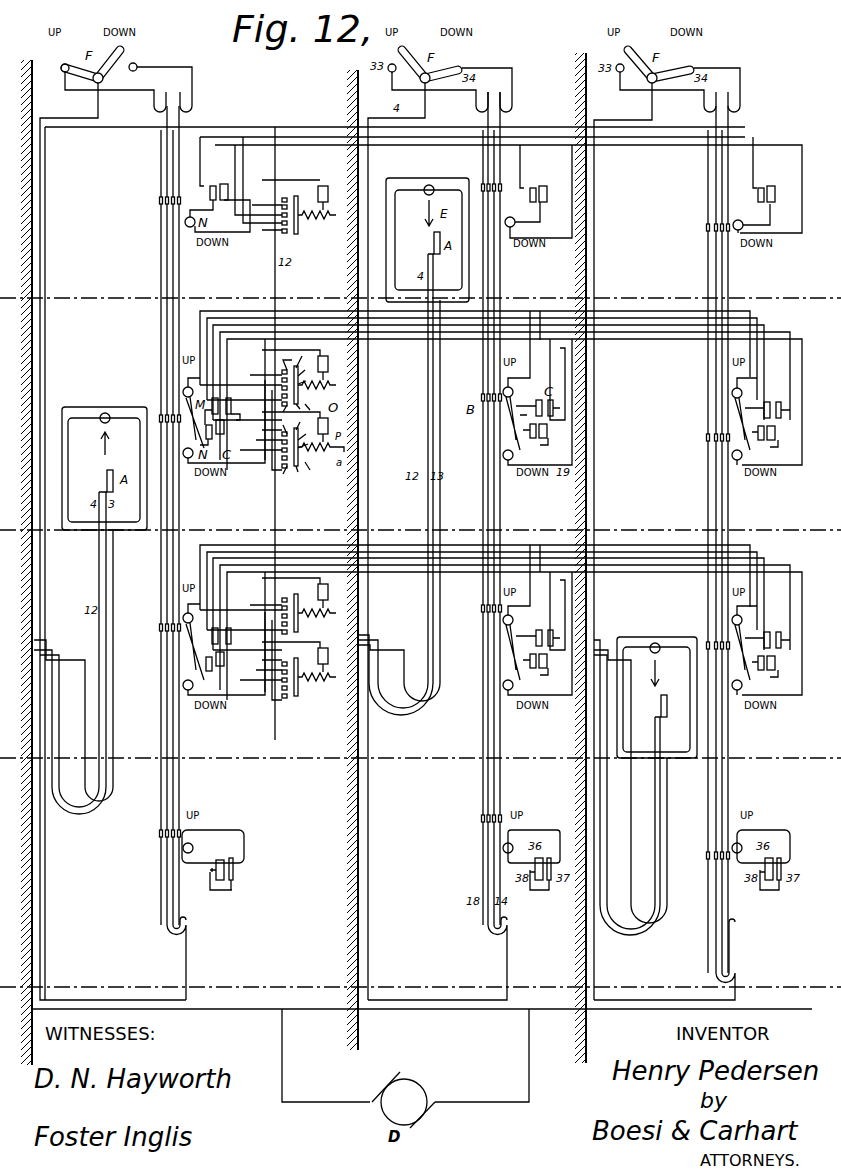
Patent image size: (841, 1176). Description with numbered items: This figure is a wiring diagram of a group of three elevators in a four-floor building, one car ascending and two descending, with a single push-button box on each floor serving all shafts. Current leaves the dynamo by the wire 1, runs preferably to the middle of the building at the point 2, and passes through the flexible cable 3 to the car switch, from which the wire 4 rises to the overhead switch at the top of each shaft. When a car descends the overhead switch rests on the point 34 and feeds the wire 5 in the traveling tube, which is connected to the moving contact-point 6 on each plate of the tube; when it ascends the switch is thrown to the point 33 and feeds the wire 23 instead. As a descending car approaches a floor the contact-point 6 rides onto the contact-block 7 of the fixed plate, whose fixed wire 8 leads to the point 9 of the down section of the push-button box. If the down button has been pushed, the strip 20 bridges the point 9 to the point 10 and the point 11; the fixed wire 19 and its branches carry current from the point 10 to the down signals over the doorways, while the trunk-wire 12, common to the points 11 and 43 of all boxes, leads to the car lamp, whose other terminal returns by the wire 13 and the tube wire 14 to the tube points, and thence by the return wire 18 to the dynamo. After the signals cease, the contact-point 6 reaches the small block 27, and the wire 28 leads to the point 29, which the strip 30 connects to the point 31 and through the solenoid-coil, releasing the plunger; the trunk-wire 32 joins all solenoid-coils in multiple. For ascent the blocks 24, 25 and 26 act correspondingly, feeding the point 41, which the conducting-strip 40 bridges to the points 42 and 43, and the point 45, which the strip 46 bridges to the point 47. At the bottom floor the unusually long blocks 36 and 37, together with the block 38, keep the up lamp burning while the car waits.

The wire from dynamo 1 is at (422, 1006).
The middle connection point of building 2 is at (90, 610).
The flexible cable 3 is at (413, 446).
The wire from car switch to overhead switch 4 is at (113, 541).
The down wire in traveling tube 5 is at (505, 508).
The moving contact-point 6 is at (213, 400).
The contact-block of fixed plate 7 is at (229, 400).
The fixed wire from block to push-button box 8 is at (552, 365).
The down-section contact-point 9 is at (305, 446).
The down-section contact-point to door signal 10 is at (307, 434).
The down-section contact-point to trunk wire 11 is at (284, 427).
The trunk-wire to car signal 12 is at (218, 515).
The wire from car-lamp to traveling tube 13 is at (145, 515).
The wire in traveling tube to contact-points 14 is at (348, 958).
The return wire of traveling tube 18 is at (173, 958).
The fixed wire to down signal 19 is at (225, 409).
The conducting-strip of down plunger 20 is at (303, 423).
The up wire in traveling tube 23 is at (476, 508).
The up contact-block of fixed plate 24 is at (222, 434).
The up contact-block 25 is at (207, 444).
The small up release block 26 is at (210, 417).
The small down release block 27 is at (227, 427).
The wire from release block 28 is at (237, 422).
The down-section solenoid contact-point 29 is at (298, 474).
The conducting-strip of down plunger for solenoid 30 is at (312, 471).
The down-section solenoid contact-point 31 is at (281, 474).
The trunk-wire for solenoids 32 is at (335, 475).
The up contact-point of overhead switch 33 is at (104, 87).
The down contact-point of overhead switch 34 is at (160, 87).
The long bottom-floor block 36 is at (213, 846).
The long bottom-floor block 37 is at (241, 874).
The bottom-floor up block 38 is at (214, 875).
The conducting-strip of up plunger 40 is at (307, 371).
The up-section contact-point 41 is at (307, 383).
The up-section contact-point to up lamp 42 is at (304, 360).
The up-section contact-point to trunk wire 43 is at (288, 364).
The up-section solenoid contact-point 45 is at (302, 412).
The conducting-strip of up plunger for solenoid 46 is at (311, 412).
The up-section solenoid contact-point 47 is at (284, 413).